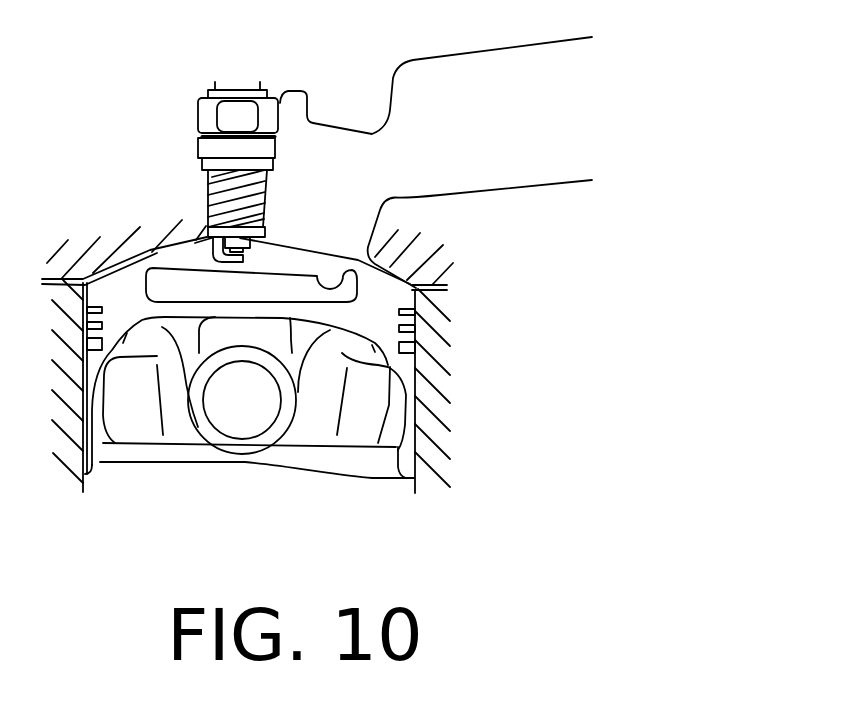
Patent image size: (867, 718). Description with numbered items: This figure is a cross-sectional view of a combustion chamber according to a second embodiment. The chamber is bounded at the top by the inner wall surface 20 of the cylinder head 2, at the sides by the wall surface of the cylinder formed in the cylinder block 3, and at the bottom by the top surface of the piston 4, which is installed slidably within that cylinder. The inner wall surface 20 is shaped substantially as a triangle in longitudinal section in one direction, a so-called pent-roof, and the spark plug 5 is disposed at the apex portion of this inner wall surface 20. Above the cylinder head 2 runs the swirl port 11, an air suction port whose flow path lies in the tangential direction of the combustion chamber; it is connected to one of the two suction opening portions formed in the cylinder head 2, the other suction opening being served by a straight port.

The cylinder head 2 is at (413, 258).
The cylinder block 3 is at (430, 350).
The piston 4 is at (320, 417).
The spark plug 5 is at (207, 192).
The swirl port 11 is at (450, 100).
The inner wall surface 20 is at (193, 243).